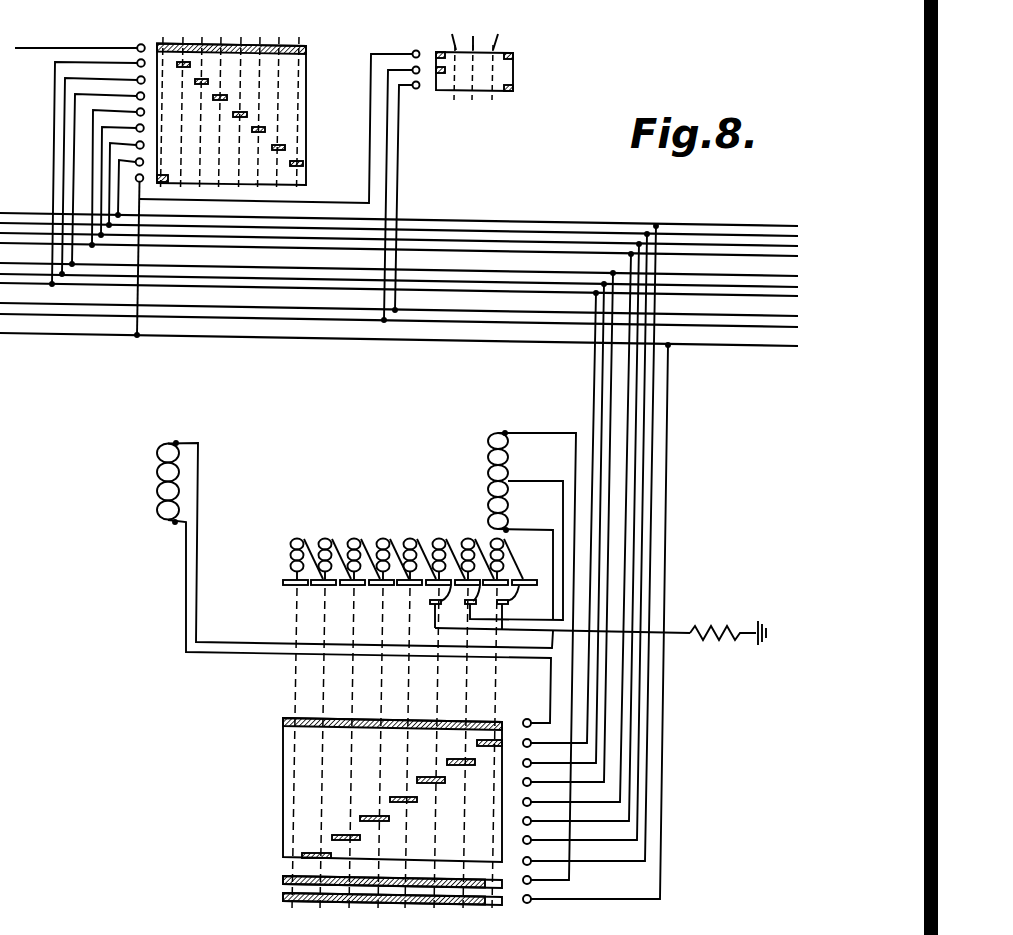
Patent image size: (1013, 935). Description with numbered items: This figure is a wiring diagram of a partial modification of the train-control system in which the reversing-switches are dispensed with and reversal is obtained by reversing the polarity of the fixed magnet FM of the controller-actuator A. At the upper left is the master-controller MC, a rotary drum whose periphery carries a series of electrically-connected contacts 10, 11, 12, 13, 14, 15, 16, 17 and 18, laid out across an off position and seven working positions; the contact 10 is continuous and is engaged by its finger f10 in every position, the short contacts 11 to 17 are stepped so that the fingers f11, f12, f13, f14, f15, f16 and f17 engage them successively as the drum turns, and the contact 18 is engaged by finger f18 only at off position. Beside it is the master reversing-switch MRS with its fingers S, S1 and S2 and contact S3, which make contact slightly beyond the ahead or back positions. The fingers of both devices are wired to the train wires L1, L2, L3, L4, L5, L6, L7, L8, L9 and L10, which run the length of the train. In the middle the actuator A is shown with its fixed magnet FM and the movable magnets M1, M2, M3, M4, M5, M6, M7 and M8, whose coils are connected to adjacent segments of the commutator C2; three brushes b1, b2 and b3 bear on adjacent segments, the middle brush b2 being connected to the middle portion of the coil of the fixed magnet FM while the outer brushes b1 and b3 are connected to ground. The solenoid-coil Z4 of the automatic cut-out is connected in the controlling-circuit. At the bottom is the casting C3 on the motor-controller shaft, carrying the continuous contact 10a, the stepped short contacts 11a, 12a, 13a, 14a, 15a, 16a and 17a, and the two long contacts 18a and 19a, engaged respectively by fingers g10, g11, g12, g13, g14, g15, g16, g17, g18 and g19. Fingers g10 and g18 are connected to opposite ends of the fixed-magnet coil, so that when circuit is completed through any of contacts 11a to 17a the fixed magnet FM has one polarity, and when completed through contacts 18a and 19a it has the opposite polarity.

The master-controller MC is at (306, 128).
The continuous contact 10 is at (308, 50).
The short contact 11 is at (190, 64).
The short contact 12 is at (208, 81).
The short contact 13 is at (227, 97).
The short contact 14 is at (247, 114).
The short contact 15 is at (265, 129).
The short contact 16 is at (285, 147).
The short contact 17 is at (303, 163).
The off-position contact 18 is at (168, 176).
The contact-finger f10 is at (87, 44).
The contact-finger f11 is at (97, 168).
The contact-finger f12 is at (102, 171).
The contact-finger f13 is at (107, 174).
The contact-finger f14 is at (117, 173).
The contact-finger f15 is at (121, 176).
The contact-finger f16 is at (125, 179).
The contact-finger f17 is at (129, 182).
The contact-finger f18 is at (132, 251).
The master reversing-switch MRS is at (464, 82).
The finger S is at (397, 52).
The finger S1 is at (409, 191).
The finger S2 is at (461, 180).
The contact S3 is at (517, 88).
The train wire L1 is at (430, 213).
The train wire L2 is at (472, 214).
The train wire L3 is at (515, 242).
The train wire L4 is at (585, 254).
The train wire L5 is at (441, 270).
The train wire L6 is at (484, 266).
The train wire L7 is at (450, 290).
The train wire L8 is at (490, 311).
The train wire L9 is at (399, 327).
The train wire L10 is at (500, 340).
The finger g10 is at (359, 627).
The finger g11 is at (551, 523).
The finger g12 is at (555, 528).
The finger g13 is at (560, 532).
The finger g14 is at (569, 533).
The finger g15 is at (573, 537).
The finger g16 is at (577, 542).
The finger g17 is at (581, 548).
The additional finger g18 is at (537, 661).
The additional finger g19 is at (587, 627).
The solenoid-coil Z4 is at (156, 466).
The fixed magnet FM is at (487, 450).
The movable magnet M1 is at (320, 548).
The movable magnet M2 is at (473, 548).
The movable magnet M3 is at (442, 538).
The movable magnet M4 is at (419, 548).
The movable magnet M5 is at (384, 548).
The movable magnet M6 is at (360, 538).
The movable magnet M7 is at (506, 556).
The movable magnet M8 is at (290, 552).
The controller-actuator A is at (359, 548).
The commutator C2 is at (290, 590).
The brush b1 is at (517, 608).
The brush b2 is at (461, 605).
The brush b3 is at (430, 607).
The casting C3 is at (283, 787).
The continuous contact 10a is at (405, 727).
The short contact 11a is at (477, 743).
The short contact 12a is at (447, 761).
The short contact 13a is at (417, 780).
The short contact 14a is at (390, 799).
The short contact 15a is at (360, 818).
The short contact 16a is at (360, 837).
The short contact 17a is at (331, 855).
The long contact 18a is at (283, 878).
The long contact 19a is at (283, 896).